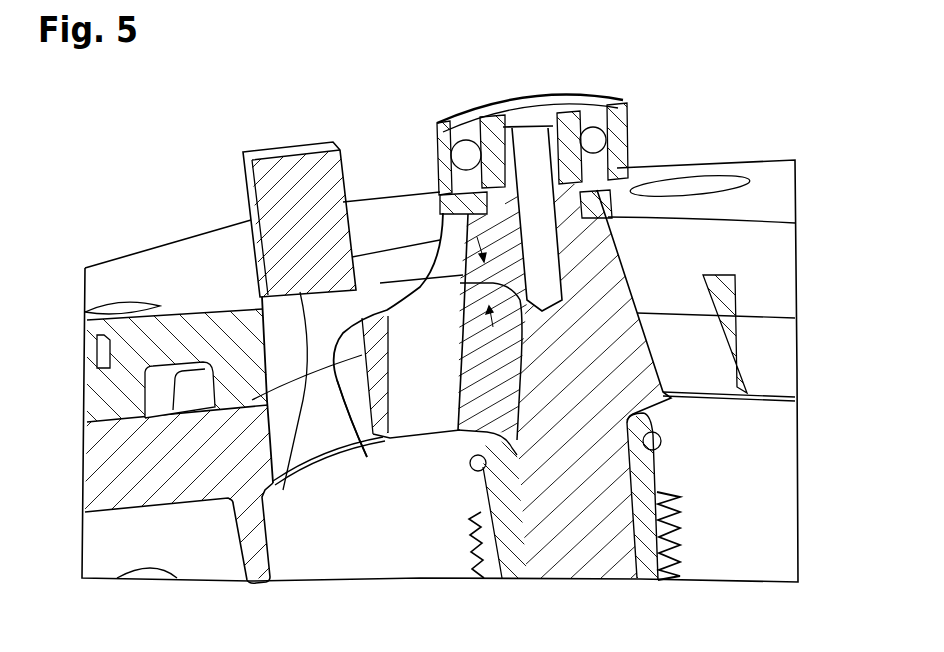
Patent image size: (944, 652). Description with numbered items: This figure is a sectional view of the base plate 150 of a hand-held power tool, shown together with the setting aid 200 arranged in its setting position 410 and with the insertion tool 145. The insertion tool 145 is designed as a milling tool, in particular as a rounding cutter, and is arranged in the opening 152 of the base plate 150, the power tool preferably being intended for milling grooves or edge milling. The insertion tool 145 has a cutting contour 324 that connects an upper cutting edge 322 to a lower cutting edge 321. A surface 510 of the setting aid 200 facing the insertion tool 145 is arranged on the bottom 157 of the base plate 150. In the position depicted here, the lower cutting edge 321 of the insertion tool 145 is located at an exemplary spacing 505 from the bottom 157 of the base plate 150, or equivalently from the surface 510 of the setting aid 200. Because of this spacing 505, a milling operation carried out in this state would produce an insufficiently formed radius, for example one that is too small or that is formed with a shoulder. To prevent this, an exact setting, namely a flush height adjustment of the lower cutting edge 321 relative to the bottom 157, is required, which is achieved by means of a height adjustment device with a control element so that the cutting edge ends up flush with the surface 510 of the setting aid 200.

The insertion tool 145 is at (605, 286).
The base plate 150 is at (140, 277).
The opening 152 is at (776, 268).
The bottom 157 is at (787, 172).
The setting aid 200 is at (278, 150).
The lower cutting edge 321 is at (367, 457).
The upper cutting edge 322 is at (435, 203).
The cutting contour 324 is at (443, 213).
The setting position 410 is at (225, 188).
The spacing 505 is at (517, 440).
The surface 510 is at (283, 490).